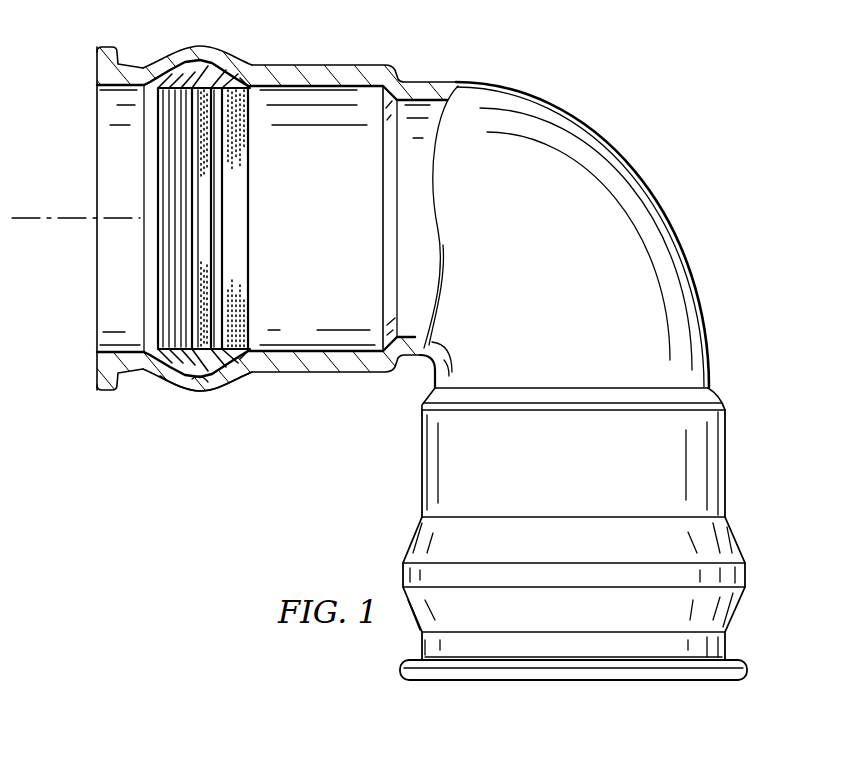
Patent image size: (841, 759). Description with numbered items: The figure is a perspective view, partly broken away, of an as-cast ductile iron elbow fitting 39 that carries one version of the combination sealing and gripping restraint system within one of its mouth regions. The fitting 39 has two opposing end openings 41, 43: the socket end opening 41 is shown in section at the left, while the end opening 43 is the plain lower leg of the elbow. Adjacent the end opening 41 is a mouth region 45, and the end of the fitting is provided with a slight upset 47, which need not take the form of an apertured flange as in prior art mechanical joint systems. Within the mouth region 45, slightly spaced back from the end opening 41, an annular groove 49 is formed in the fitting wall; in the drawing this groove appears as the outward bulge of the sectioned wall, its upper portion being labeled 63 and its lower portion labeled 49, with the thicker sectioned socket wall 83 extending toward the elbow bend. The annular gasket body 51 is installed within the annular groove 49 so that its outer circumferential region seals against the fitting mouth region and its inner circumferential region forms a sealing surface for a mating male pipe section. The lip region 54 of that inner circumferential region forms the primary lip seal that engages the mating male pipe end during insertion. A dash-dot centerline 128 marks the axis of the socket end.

The as-cast fitting 39 is at (739, 276).
The end opening 41 is at (78, 194).
The end opening 43 is at (596, 689).
The mouth region 45 is at (110, 88).
The upset 47 is at (103, 392).
The annular groove 49 is at (203, 393).
The annular gasket body 51 is at (230, 72).
The lip region 54 is at (246, 340).
The annular bead 63 is at (187, 48).
The socket wall 83 is at (388, 97).
The centerline axis 128 is at (68, 220).